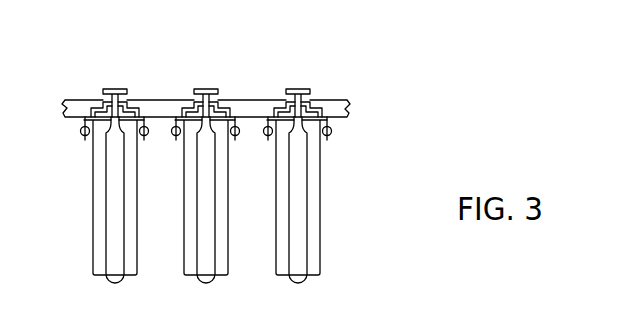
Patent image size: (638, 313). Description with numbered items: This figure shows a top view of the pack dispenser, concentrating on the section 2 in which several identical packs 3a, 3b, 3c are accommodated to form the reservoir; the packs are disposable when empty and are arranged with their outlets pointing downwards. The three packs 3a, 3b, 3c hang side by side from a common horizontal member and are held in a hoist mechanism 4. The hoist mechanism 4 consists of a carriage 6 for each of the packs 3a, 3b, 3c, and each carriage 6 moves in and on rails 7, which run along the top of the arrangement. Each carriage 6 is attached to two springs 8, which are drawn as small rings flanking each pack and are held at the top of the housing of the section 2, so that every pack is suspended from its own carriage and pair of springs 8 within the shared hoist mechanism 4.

The section 2 is at (237, 78).
The pack 3a is at (93, 243).
The pack 3b is at (185, 222).
The pack 3c is at (321, 213).
The hoist mechanism 4 is at (308, 90).
The carriage 6 is at (103, 100).
The rails 7 is at (128, 101).
The springs 8 is at (84, 138).